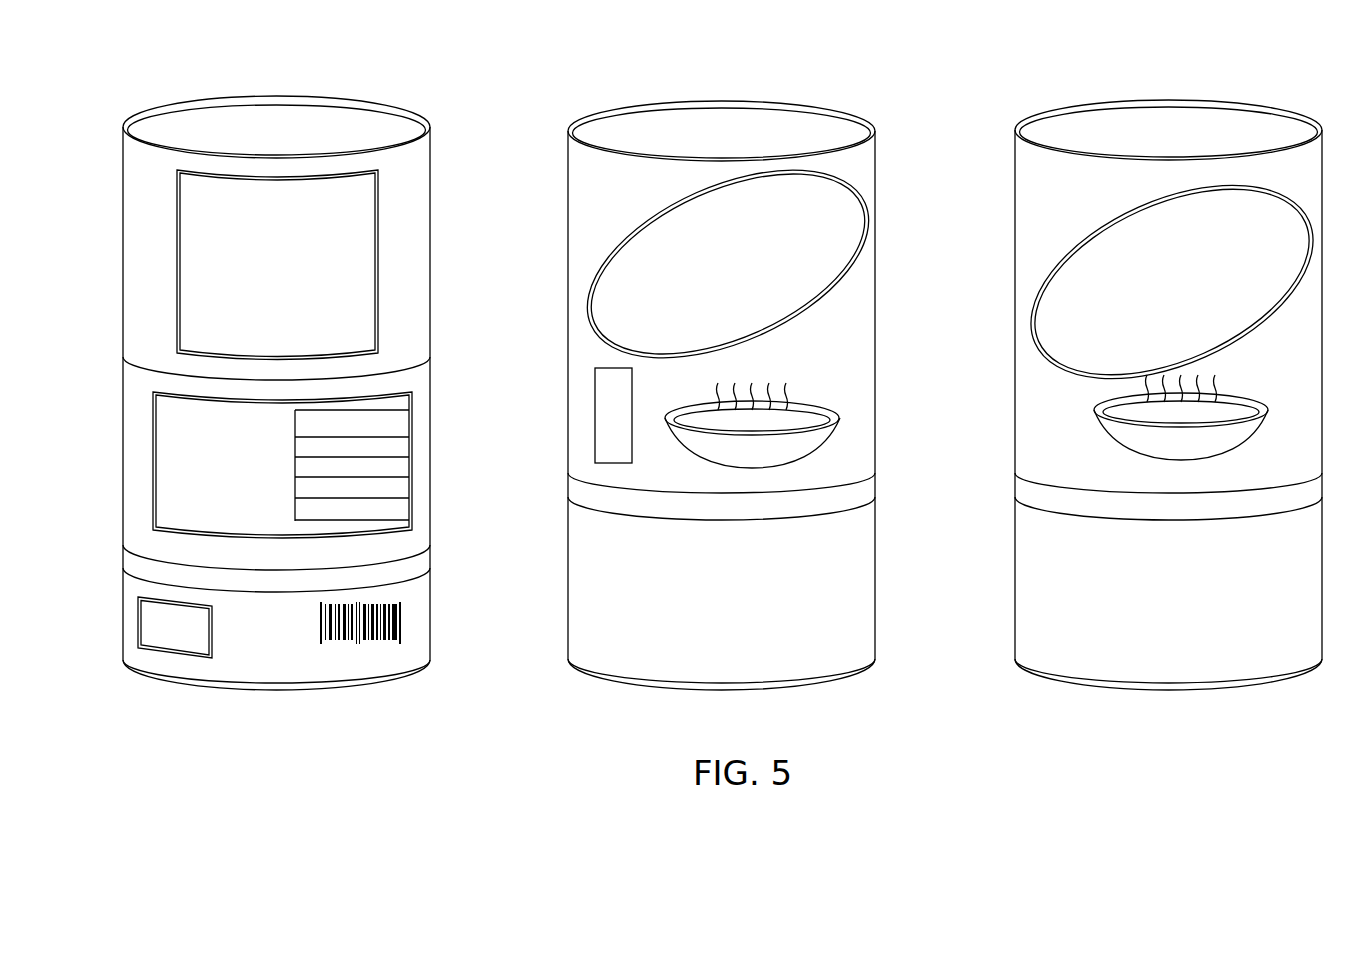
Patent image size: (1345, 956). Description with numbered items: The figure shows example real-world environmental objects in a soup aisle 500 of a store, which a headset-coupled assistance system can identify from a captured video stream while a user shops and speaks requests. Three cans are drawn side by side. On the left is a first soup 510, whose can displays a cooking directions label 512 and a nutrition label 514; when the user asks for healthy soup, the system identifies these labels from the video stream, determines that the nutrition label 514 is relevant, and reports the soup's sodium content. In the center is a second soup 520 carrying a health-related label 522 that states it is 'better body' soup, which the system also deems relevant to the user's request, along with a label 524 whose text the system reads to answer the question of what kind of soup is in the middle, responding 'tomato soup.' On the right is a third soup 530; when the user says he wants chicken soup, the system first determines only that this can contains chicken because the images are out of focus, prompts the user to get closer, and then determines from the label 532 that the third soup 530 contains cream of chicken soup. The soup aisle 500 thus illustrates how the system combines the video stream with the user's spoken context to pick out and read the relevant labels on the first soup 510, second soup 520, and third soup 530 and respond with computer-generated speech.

The soup aisle 500 is at (298, 34).
The first soup 510 is at (363, 124).
The cooking directions label 512 is at (362, 277).
The nutrition label 514 is at (402, 520).
The second soup 520 is at (783, 123).
The health-related label 522 is at (598, 432).
The label 524 is at (847, 215).
The third soup 530 is at (1142, 125).
The label 532 is at (1066, 333).